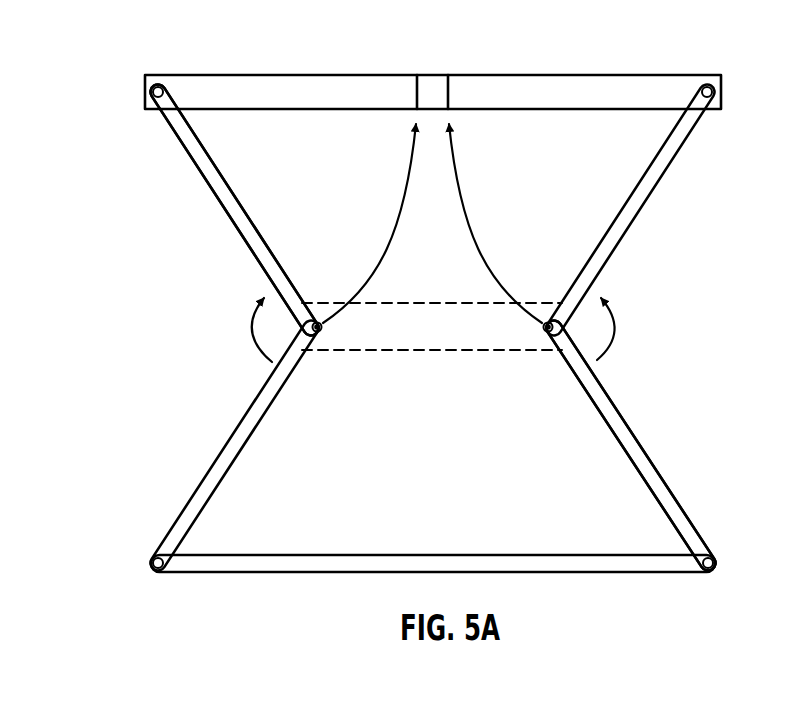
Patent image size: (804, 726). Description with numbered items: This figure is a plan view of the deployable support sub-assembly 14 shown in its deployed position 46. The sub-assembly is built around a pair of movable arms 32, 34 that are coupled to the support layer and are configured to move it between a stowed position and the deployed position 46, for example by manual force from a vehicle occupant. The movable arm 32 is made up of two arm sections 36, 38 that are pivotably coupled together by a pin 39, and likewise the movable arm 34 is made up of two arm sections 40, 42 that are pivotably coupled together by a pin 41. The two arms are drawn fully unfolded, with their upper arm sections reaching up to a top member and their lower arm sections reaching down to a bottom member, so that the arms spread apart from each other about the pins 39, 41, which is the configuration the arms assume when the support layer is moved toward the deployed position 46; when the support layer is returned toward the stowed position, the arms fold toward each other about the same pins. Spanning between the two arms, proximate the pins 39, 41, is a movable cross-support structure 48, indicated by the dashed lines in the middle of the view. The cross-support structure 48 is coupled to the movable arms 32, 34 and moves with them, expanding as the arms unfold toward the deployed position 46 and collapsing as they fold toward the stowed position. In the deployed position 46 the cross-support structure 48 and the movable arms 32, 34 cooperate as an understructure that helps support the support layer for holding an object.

The deployable support sub-assembly 14 is at (582, 50).
The deployed position 46 is at (100, 70).
The movable arm 32 is at (203, 164).
The arm section 36 is at (226, 213).
The arm section 40 is at (637, 210).
The arm section 38 is at (223, 443).
The movable arm 34 is at (643, 440).
The arm section 42 is at (660, 488).
The pin 39 is at (318, 336).
The pin 41 is at (549, 336).
The movable cross-support structure 48 is at (405, 342).